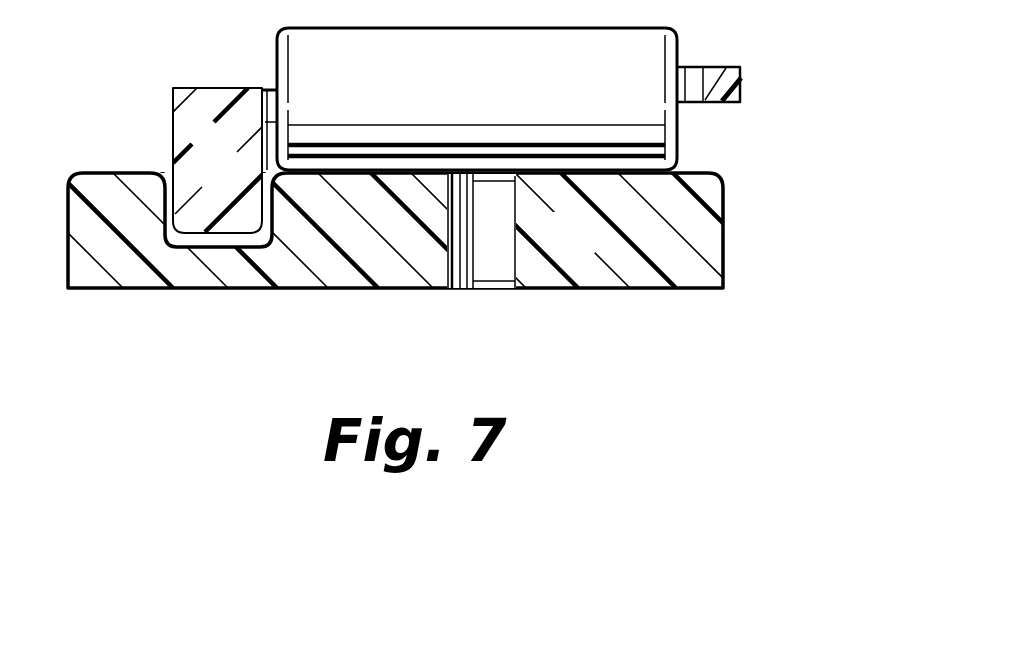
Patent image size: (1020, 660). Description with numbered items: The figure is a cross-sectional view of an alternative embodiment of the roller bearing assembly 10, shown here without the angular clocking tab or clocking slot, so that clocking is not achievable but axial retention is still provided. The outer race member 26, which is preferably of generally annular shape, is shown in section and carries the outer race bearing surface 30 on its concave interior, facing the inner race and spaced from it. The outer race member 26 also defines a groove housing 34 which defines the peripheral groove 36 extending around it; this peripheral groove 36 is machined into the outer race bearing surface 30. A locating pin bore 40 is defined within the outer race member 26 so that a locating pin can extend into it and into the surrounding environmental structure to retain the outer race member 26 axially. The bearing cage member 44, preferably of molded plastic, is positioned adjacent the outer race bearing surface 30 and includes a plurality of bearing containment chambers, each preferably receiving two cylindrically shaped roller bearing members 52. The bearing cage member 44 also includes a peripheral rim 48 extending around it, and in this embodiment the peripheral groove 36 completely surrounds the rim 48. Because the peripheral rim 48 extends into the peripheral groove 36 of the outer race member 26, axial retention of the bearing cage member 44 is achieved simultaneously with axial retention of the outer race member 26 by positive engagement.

The roller bearing assembly 10 is at (420, 186).
The outer race member 26 is at (397, 227).
The outer race bearing surface 30 is at (637, 177).
The groove housing 34 is at (122, 177).
The peripheral groove 36 is at (215, 243).
The locating pin bore 40 is at (500, 273).
The bearing cage member 44 is at (271, 89).
The peripheral rim 48 is at (225, 175).
The roller bearing members 52 is at (512, 98).